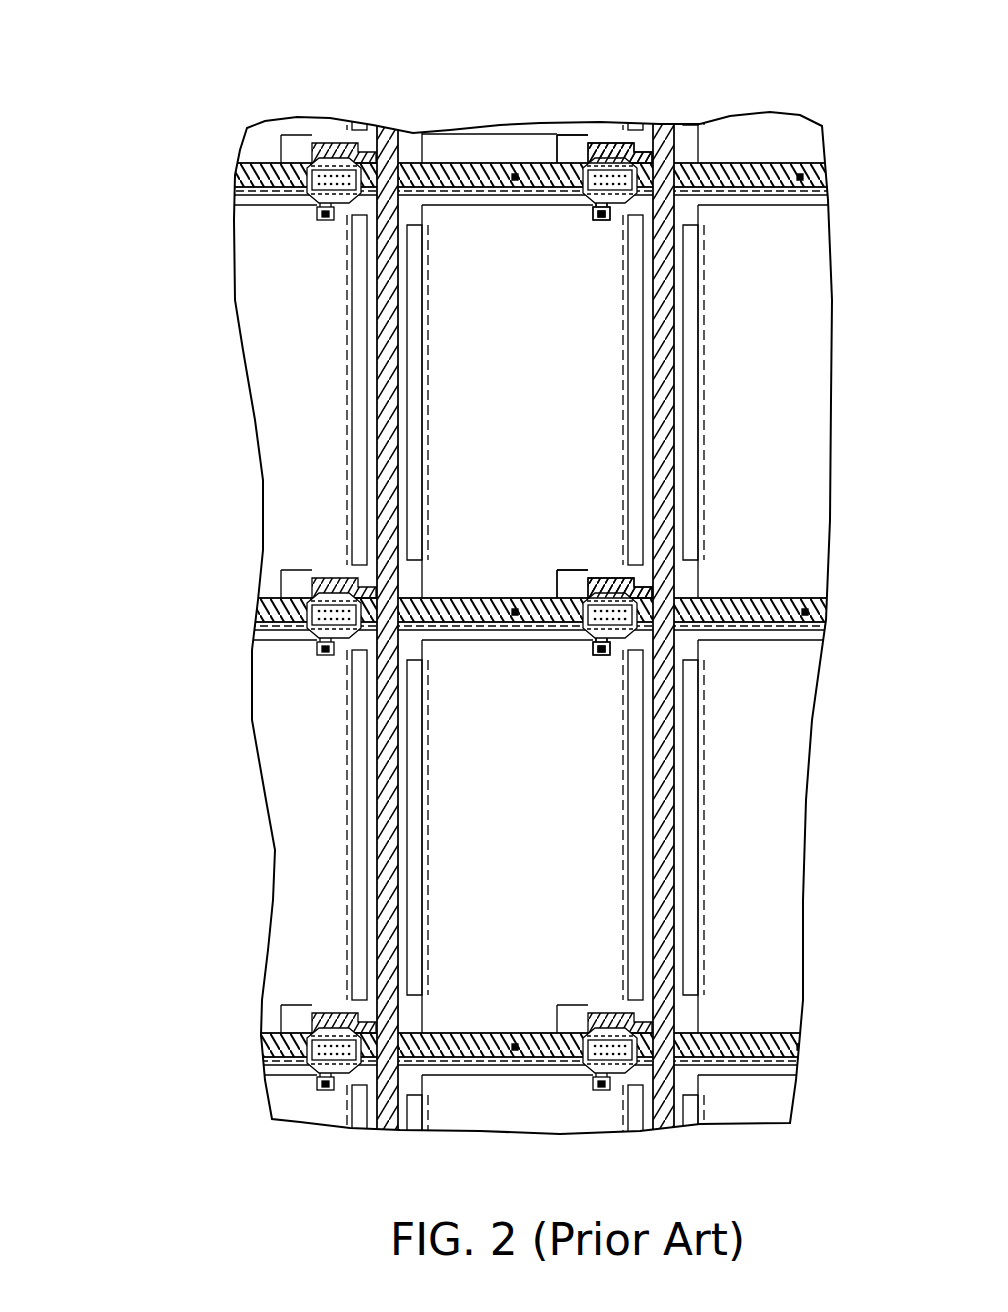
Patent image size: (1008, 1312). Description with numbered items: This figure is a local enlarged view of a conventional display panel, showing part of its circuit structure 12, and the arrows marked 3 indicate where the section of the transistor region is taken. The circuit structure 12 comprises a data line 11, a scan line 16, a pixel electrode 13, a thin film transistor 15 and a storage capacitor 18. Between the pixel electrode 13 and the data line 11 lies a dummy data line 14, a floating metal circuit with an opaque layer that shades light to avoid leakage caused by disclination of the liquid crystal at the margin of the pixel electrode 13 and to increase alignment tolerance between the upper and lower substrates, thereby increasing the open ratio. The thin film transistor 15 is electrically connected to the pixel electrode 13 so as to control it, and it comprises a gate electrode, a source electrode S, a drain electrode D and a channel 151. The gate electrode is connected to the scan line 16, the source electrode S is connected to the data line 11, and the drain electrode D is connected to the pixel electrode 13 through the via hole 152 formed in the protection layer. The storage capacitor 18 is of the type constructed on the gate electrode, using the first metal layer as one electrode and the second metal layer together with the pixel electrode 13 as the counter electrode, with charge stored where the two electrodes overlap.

The data line 11 is at (385, 128).
The circuit structure 12 is at (505, 108).
The pixel electrode 13 is at (506, 220).
The dummy data line 14 is at (633, 350).
The thin film transistor 15 is at (637, 112).
The channel 151 is at (610, 158).
The via hole 152 is at (599, 222).
The scan line 16 is at (292, 185).
The storage capacitor 18 is at (462, 590).
The source electrode S is at (618, 158).
The drain electrode D is at (603, 222).
The section line 3 is at (596, 106).